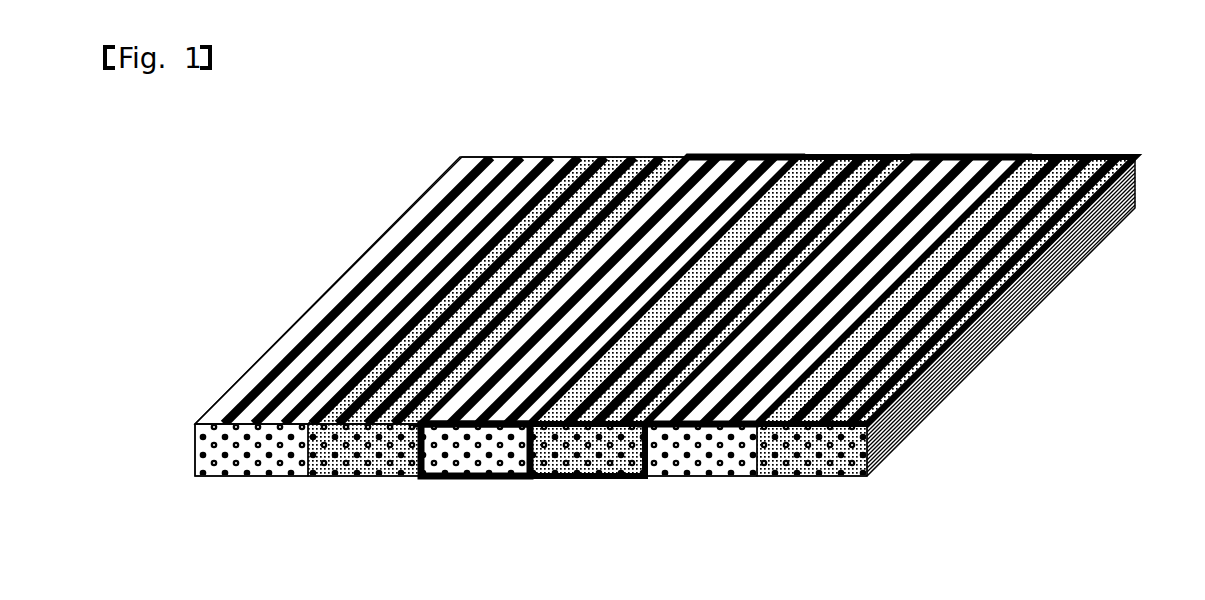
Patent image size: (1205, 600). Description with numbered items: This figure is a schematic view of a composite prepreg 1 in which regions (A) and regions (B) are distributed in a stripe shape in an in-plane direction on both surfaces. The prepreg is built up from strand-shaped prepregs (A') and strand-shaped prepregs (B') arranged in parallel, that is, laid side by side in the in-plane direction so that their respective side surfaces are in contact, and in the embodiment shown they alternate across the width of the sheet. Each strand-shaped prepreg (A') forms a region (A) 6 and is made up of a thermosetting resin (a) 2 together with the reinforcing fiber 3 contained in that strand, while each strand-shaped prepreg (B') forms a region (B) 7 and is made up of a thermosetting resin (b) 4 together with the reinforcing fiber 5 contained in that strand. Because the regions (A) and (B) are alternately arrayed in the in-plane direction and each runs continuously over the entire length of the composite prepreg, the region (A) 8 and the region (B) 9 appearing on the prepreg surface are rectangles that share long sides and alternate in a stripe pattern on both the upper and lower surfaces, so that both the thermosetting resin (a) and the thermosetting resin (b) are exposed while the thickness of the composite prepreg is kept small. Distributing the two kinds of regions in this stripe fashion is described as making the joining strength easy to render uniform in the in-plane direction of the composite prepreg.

The composite prepreg 1 is at (304, 261).
The thermosetting resin (a) 2 is at (217, 470).
The reinforcing fiber contained in strand-shaped prepreg (A') 3 is at (275, 455).
The thermosetting resin (b) 4 is at (338, 477).
The reinforcing fiber contained in strand-shaped prepreg (B') 5 is at (395, 455).
The region (A) 6 is at (470, 481).
The region (B) 7 is at (578, 486).
The region (A) on prepreg surface 8 is at (913, 147).
The region (B) on prepreg surface 9 is at (1133, 147).